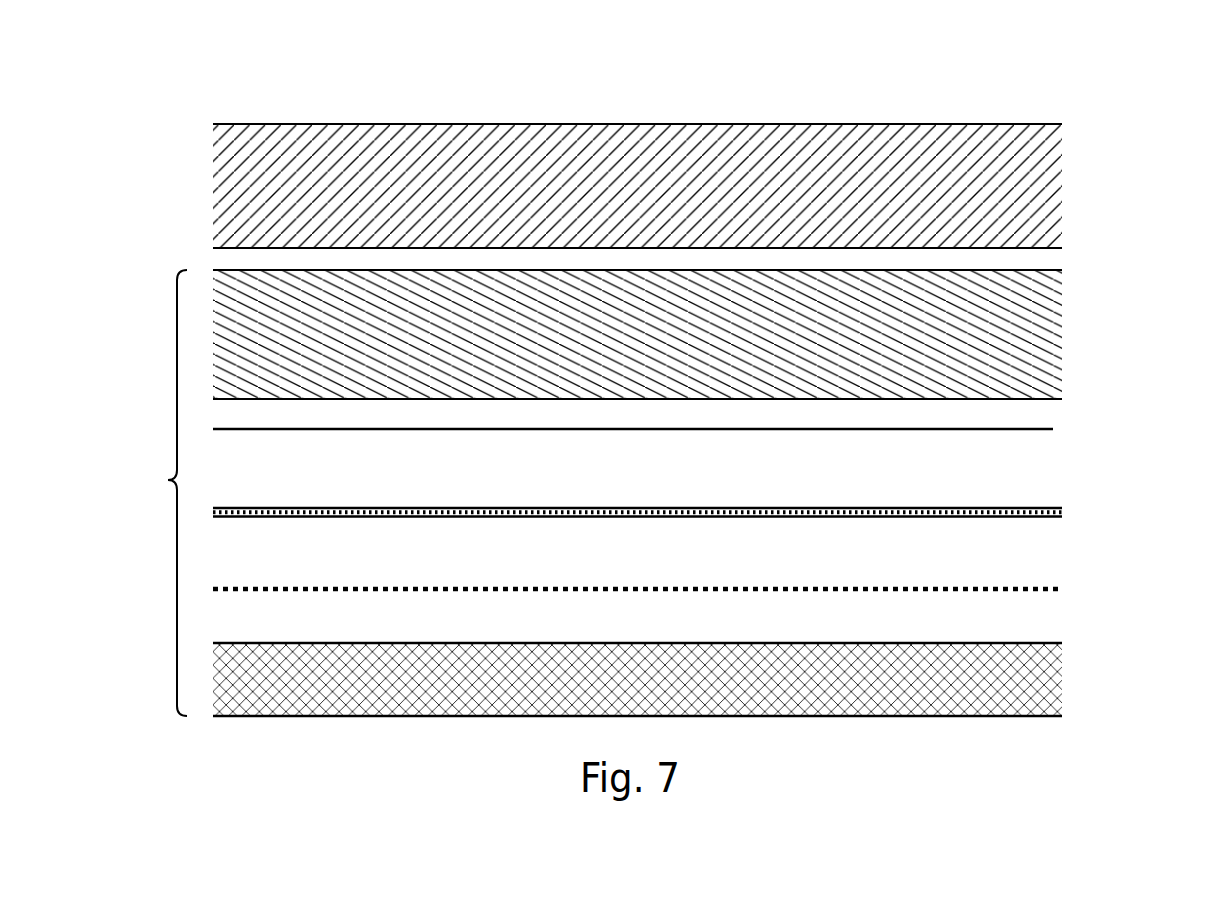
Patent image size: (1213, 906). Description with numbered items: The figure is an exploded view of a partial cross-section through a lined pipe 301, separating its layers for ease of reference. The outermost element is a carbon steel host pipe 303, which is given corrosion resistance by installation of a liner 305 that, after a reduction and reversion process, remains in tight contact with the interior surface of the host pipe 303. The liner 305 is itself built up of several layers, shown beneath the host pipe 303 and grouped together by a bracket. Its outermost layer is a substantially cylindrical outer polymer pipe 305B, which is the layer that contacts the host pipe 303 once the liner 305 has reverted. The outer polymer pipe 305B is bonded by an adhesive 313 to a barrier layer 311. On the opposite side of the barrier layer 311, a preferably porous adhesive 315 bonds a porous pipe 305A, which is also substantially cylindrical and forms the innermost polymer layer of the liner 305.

The lined pipe 301 is at (1075, 88).
The carbon steel host pipe 303 is at (1043, 168).
The liner 305 is at (147, 493).
The outer polymer pipe 305B is at (1042, 325).
The adhesive 313 is at (1053, 429).
The barrier layer 311 is at (1053, 507).
The adhesive 315 is at (1057, 589).
The porous pipe 305A is at (1042, 687).